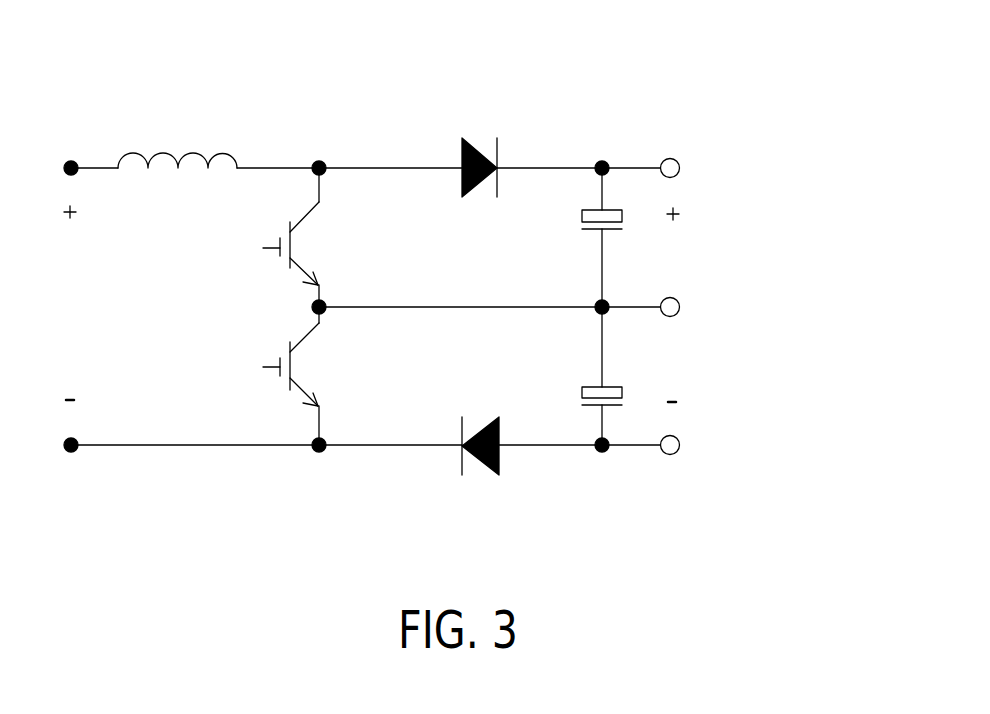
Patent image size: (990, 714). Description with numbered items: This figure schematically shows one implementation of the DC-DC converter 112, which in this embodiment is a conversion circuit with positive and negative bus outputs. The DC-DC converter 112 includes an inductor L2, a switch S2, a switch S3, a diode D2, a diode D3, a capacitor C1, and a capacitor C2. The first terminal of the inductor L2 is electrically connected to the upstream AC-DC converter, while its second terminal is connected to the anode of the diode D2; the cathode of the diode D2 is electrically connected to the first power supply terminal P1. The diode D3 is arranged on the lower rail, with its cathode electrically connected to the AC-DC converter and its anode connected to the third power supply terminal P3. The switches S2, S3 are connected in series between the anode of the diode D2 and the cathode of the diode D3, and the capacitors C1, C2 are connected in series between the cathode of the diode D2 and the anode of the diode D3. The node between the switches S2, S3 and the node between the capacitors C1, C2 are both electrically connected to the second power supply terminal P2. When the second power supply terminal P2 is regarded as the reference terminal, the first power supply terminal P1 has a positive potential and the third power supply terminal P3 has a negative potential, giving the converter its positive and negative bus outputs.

The DC-DC converter 112 is at (942, 79).
The inductor L2 is at (177, 136).
The diode D2 is at (479, 145).
The diode D3 is at (480, 424).
The switch S2 is at (281, 237).
The switch S3 is at (284, 376).
The capacitor C1 is at (618, 203).
The capacitor C2 is at (618, 378).
The first power supply terminal P1 is at (690, 166).
The second power supply terminal P2 is at (691, 307).
The third power supply terminal P3 is at (691, 447).